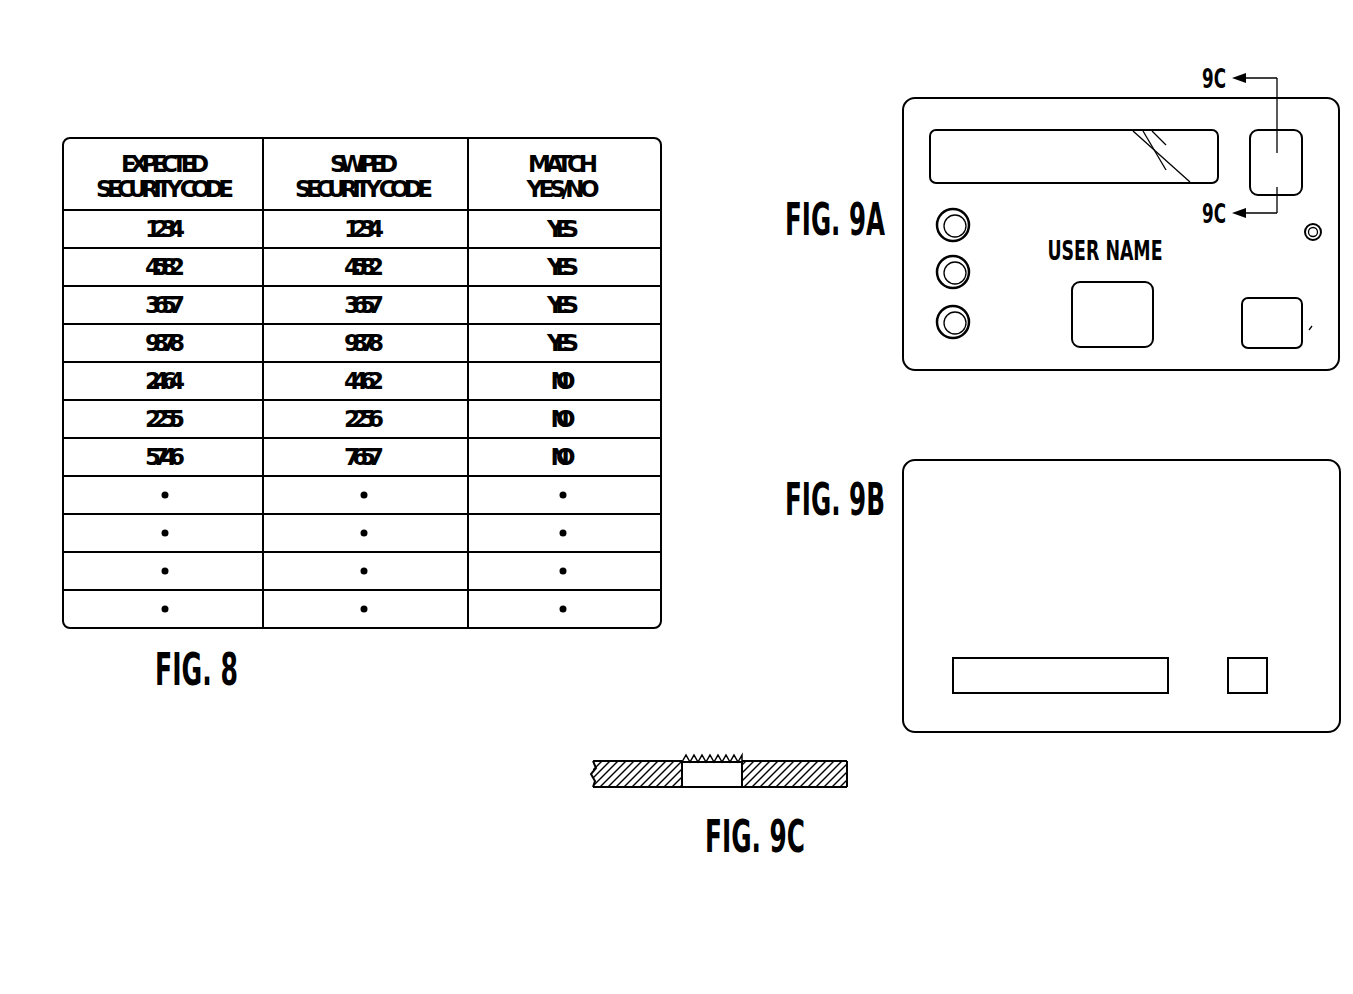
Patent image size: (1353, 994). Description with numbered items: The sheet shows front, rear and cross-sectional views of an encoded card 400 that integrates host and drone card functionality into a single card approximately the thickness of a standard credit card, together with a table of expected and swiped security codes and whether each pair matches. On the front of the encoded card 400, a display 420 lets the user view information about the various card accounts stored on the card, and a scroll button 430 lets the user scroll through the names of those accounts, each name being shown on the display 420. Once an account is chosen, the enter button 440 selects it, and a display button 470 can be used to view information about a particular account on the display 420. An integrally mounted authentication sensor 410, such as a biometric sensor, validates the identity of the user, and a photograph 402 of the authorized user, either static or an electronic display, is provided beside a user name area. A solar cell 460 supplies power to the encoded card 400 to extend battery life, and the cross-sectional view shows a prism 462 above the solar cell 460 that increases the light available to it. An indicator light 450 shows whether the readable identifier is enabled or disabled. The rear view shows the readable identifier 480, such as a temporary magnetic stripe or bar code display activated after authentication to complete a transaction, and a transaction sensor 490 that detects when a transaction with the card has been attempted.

In FIG. 9A, the encoded card 400 is at (988, 76).
In FIG. 9B, the encoded card 400 is at (1032, 447).
In FIG. 9A, the photograph 402 is at (1105, 343).
In FIG. 9A, the authentication sensor 410 is at (1269, 330).
In FIG. 9A, the display 420 is at (1083, 140).
In FIG. 9A, the scroll button 430 is at (969, 224).
In FIG. 9A, the enter button 440 is at (969, 271).
In FIG. 9A, the indicator light 450 is at (1304, 236).
In FIG. 9A, the solar cell 460 is at (1290, 148).
In FIG. 9C, the solar cell 460 is at (702, 782).
In FIG. 9C, the prism 462 is at (718, 756).
In FIG. 9A, the display button 470 is at (969, 321).
In FIG. 9B, the readable identifier 480 is at (1125, 675).
In FIG. 9B, the transaction sensor 490 is at (1256, 685).